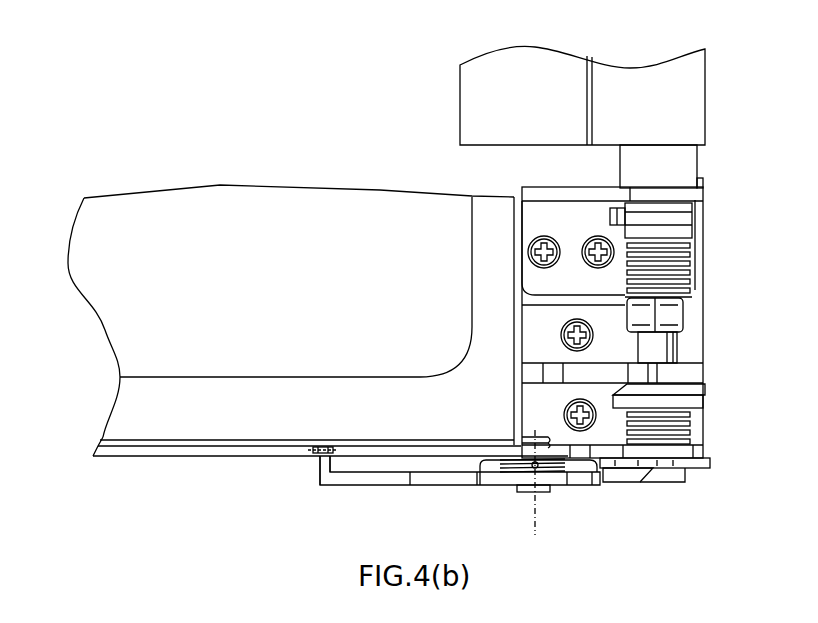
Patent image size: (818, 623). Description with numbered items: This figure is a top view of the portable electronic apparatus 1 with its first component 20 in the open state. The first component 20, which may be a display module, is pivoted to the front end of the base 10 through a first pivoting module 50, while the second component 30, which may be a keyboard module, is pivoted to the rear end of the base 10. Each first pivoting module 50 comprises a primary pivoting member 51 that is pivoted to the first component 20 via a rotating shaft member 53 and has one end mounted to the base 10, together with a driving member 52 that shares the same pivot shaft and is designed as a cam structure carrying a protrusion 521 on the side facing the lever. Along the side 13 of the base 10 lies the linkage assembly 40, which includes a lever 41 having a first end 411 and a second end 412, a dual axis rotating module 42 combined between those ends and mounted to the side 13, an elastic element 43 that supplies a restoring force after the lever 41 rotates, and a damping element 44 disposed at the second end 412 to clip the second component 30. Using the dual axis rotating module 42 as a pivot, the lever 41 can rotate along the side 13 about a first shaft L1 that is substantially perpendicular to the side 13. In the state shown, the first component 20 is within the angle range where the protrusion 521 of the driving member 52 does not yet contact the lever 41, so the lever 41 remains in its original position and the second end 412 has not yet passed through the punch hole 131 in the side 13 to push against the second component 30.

The portable electronic apparatus 1 is at (397, 303).
The base 10 is at (330, 469).
The side 13 is at (223, 457).
The punch hole 131 is at (313, 449).
The first component 20 is at (710, 86).
The second component 30 is at (84, 312).
The linkage assembly 40 is at (440, 488).
The lever 41 is at (425, 487).
The first end 411 is at (677, 484).
The second end 412 is at (322, 478).
The dual axis rotating module 42 is at (518, 441).
The elastic element 43 is at (480, 467).
The damping element 44 is at (326, 446).
The first pivoting module 50 is at (640, 322).
The primary pivoting member 51 is at (703, 266).
The driving member 52 is at (676, 490).
The protrusion 521 is at (630, 482).
The rotating shaft member 53 is at (688, 165).
The first shaft L1 is at (534, 495).